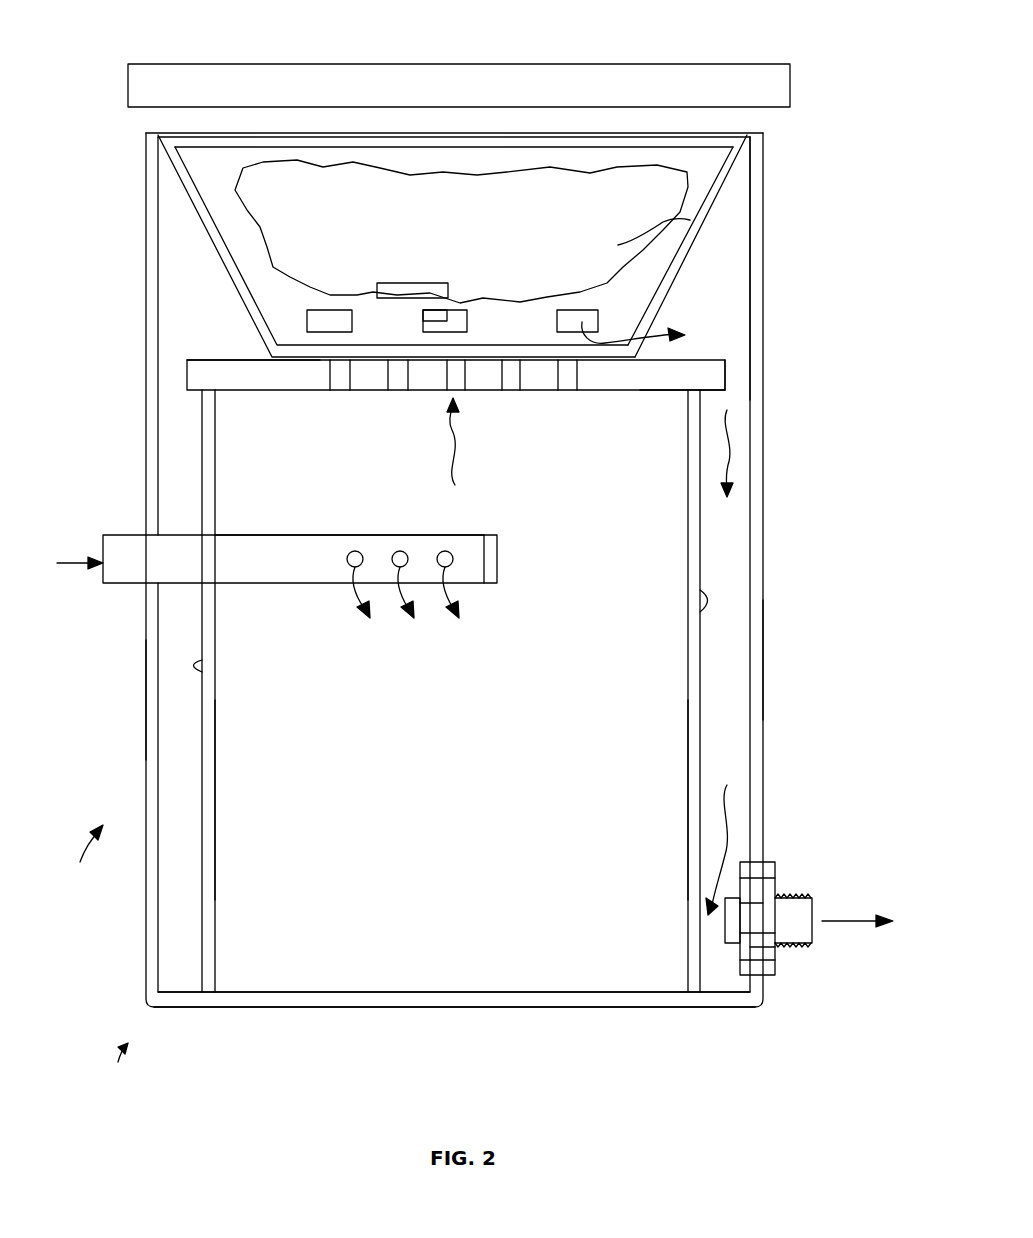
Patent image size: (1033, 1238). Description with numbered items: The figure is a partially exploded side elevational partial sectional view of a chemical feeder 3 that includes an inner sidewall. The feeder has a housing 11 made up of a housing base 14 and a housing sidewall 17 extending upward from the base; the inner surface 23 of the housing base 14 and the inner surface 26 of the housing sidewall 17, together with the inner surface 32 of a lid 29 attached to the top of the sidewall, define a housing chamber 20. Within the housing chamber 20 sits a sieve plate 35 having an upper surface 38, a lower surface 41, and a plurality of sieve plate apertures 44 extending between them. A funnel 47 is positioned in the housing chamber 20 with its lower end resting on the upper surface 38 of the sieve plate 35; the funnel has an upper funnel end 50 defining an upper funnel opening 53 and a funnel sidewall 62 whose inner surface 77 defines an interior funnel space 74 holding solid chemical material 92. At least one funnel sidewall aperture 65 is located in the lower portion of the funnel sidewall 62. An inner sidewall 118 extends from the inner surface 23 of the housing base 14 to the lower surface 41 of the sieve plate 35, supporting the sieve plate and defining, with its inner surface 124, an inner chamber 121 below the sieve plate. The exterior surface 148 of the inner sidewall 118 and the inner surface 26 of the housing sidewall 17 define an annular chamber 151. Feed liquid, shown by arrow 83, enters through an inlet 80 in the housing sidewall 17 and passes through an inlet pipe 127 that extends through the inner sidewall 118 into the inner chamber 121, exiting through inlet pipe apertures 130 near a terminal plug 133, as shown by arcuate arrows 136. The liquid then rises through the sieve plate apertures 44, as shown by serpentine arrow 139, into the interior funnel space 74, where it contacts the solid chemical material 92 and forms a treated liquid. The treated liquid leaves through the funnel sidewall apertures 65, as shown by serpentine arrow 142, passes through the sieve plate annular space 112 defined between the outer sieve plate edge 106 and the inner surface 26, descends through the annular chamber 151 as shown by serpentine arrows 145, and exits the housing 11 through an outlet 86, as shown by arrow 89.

The chemical feeder 3 is at (123, 1078).
The housing 11 is at (87, 859).
The housing base 14 is at (535, 1008).
The housing sidewall 17 is at (146, 638).
The housing chamber 20 is at (723, 268).
The inner surface of housing base 23 is at (325, 991).
The inner surface of housing sidewall 26 is at (160, 690).
The lid 29 is at (655, 74).
The inner surface of lid 32 is at (386, 115).
The sieve plate 35 is at (233, 378).
The upper surface of sieve plate 38 is at (243, 358).
The lower surface of sieve plate 41 is at (650, 390).
The sieve plate apertures 44 is at (328, 374).
The funnel 47 is at (726, 223).
The upper funnel end 50 is at (612, 131).
The upper funnel opening 53 is at (470, 124).
The funnel sidewall 62 is at (213, 248).
The funnel sidewall aperture 65 is at (315, 318).
The interior funnel space 74 is at (461, 231).
The inner surface of funnel sidewall 77 is at (642, 237).
The inlet 80 is at (118, 544).
The arrow indicating feed liquid 83 is at (80, 563).
The outlet 86 is at (815, 906).
The arrow indicating treated liquid 89 is at (850, 922).
The solid chemical material 92 is at (413, 290).
The outer sieve plate edge 106 is at (726, 363).
The sieve plate annular space 112 is at (740, 379).
The inner sidewall 118 is at (210, 750).
The inner chamber 121 is at (506, 773).
The inner surface of inner sidewall 124 is at (215, 858).
The inlet pipe 127 is at (283, 545).
The inlet pipe apertures 130 is at (355, 550).
The terminal plug 133 is at (492, 562).
The arcuate arrows 136 is at (348, 594).
The serpentine arrow 139 is at (440, 450).
The serpentine arrow 142 is at (663, 327).
The serpentine arrows 145 is at (729, 436).
The exterior surface of inner sidewall 148 is at (205, 672).
The annular chamber 151 is at (456, 678).